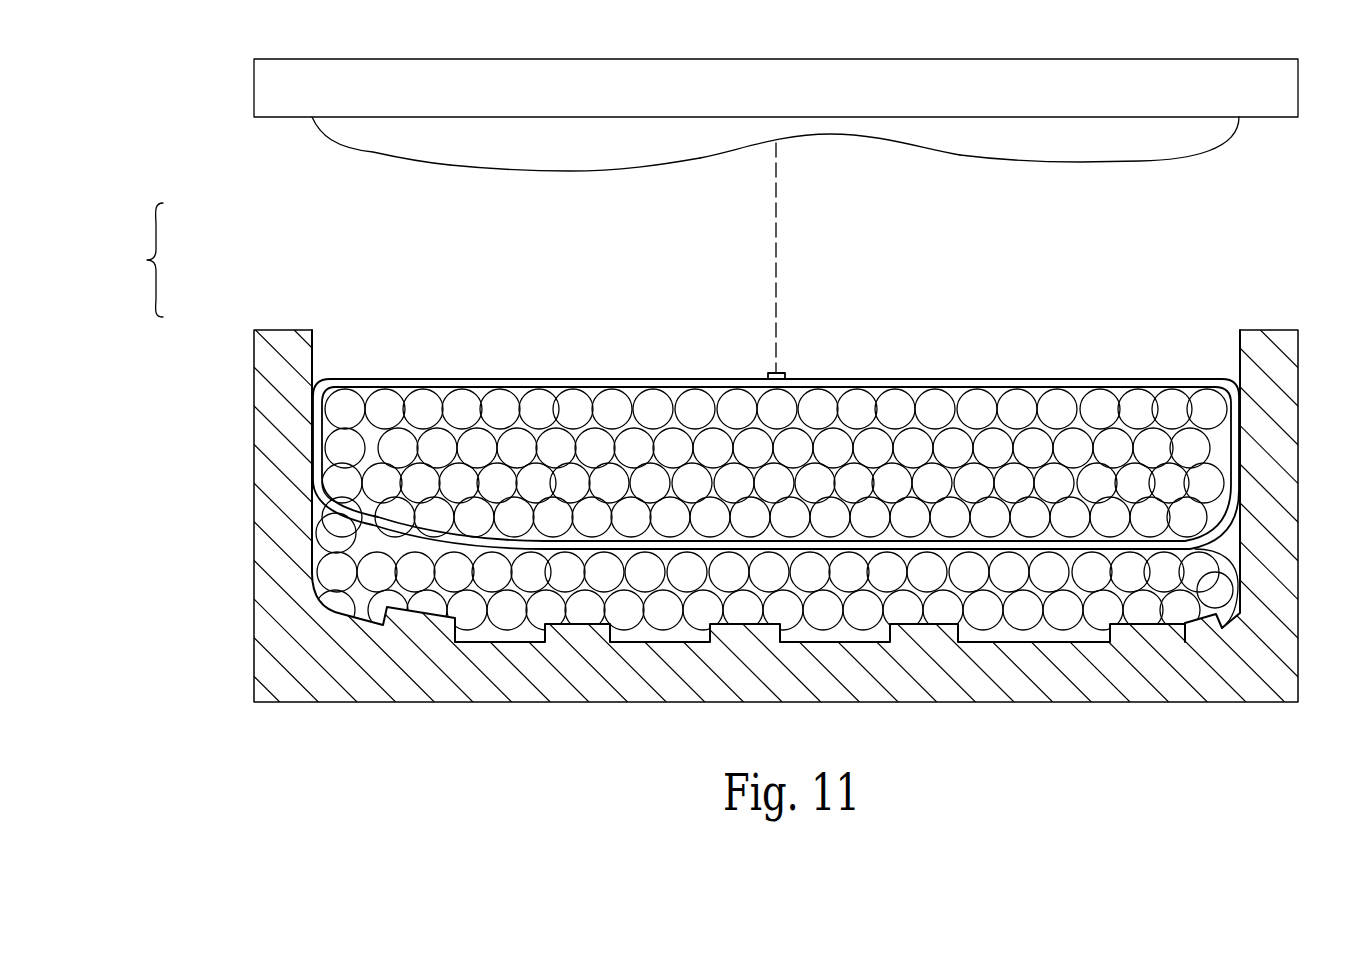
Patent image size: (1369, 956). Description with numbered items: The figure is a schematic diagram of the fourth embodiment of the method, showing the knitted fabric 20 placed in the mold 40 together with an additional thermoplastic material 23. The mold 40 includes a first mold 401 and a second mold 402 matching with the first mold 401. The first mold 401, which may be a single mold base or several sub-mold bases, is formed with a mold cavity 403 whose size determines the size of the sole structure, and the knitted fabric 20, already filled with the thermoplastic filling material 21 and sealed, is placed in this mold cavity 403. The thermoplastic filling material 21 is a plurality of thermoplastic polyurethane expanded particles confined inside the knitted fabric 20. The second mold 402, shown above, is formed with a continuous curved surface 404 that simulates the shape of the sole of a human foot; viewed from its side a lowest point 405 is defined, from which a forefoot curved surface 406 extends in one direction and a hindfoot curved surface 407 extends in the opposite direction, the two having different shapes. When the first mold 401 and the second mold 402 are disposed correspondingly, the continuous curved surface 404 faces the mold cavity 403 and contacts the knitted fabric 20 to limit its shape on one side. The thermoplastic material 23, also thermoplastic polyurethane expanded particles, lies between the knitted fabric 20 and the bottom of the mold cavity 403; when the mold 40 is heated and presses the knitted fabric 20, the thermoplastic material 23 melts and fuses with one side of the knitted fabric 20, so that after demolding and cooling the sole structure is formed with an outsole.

The mold 40 is at (684, 380).
The first mold 401 is at (254, 410).
The second mold 402 is at (254, 86).
The mold cavity 403 is at (1188, 336).
The continuous curved surface 404 is at (775, 191).
The lowest point 405 is at (569, 172).
The forefoot curved surface 406 is at (377, 150).
The hindfoot curved surface 407 is at (833, 135).
The knitted fabric 20 is at (880, 379).
The thermoplastic filling material 21 is at (1158, 447).
The thermoplastic material 23 is at (498, 610).